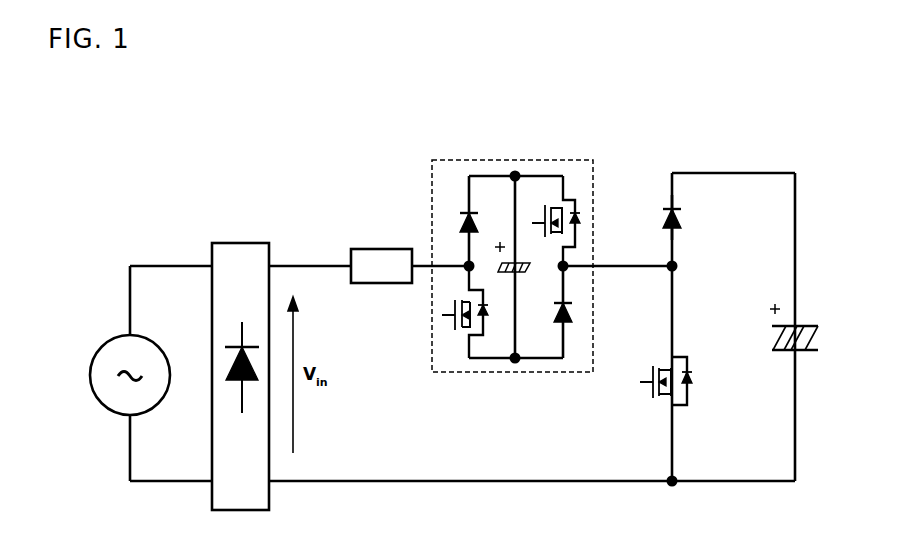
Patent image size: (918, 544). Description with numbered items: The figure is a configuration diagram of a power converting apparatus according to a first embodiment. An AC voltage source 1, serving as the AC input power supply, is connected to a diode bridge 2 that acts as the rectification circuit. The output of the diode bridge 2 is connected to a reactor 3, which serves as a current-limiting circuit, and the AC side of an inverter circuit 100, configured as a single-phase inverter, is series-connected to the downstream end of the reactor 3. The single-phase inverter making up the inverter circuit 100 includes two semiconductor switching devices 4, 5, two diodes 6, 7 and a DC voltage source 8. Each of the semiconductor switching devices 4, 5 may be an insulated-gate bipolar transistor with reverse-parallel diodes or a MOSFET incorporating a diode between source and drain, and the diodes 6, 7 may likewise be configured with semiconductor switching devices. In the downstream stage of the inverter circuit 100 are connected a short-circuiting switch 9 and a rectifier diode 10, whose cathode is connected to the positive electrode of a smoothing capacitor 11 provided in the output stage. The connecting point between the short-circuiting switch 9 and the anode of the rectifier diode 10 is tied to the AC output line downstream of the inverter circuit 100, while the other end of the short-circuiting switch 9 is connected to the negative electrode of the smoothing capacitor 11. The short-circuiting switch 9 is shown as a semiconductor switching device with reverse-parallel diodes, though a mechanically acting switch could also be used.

The AC voltage source 1 is at (83, 382).
The diode bridge 2 is at (209, 243).
The reactor 3 is at (357, 242).
The semiconductor switching device 4 is at (460, 337).
The semiconductor switching device 5 is at (572, 192).
The diode 6 is at (453, 225).
The diode 7 is at (575, 312).
The DC voltage source 8 is at (513, 275).
The short-circuiting switch 9 is at (652, 398).
The rectifier diode 10 is at (682, 222).
The smoothing capacitor 11 is at (800, 322).
The inverter circuit 100 is at (432, 160).